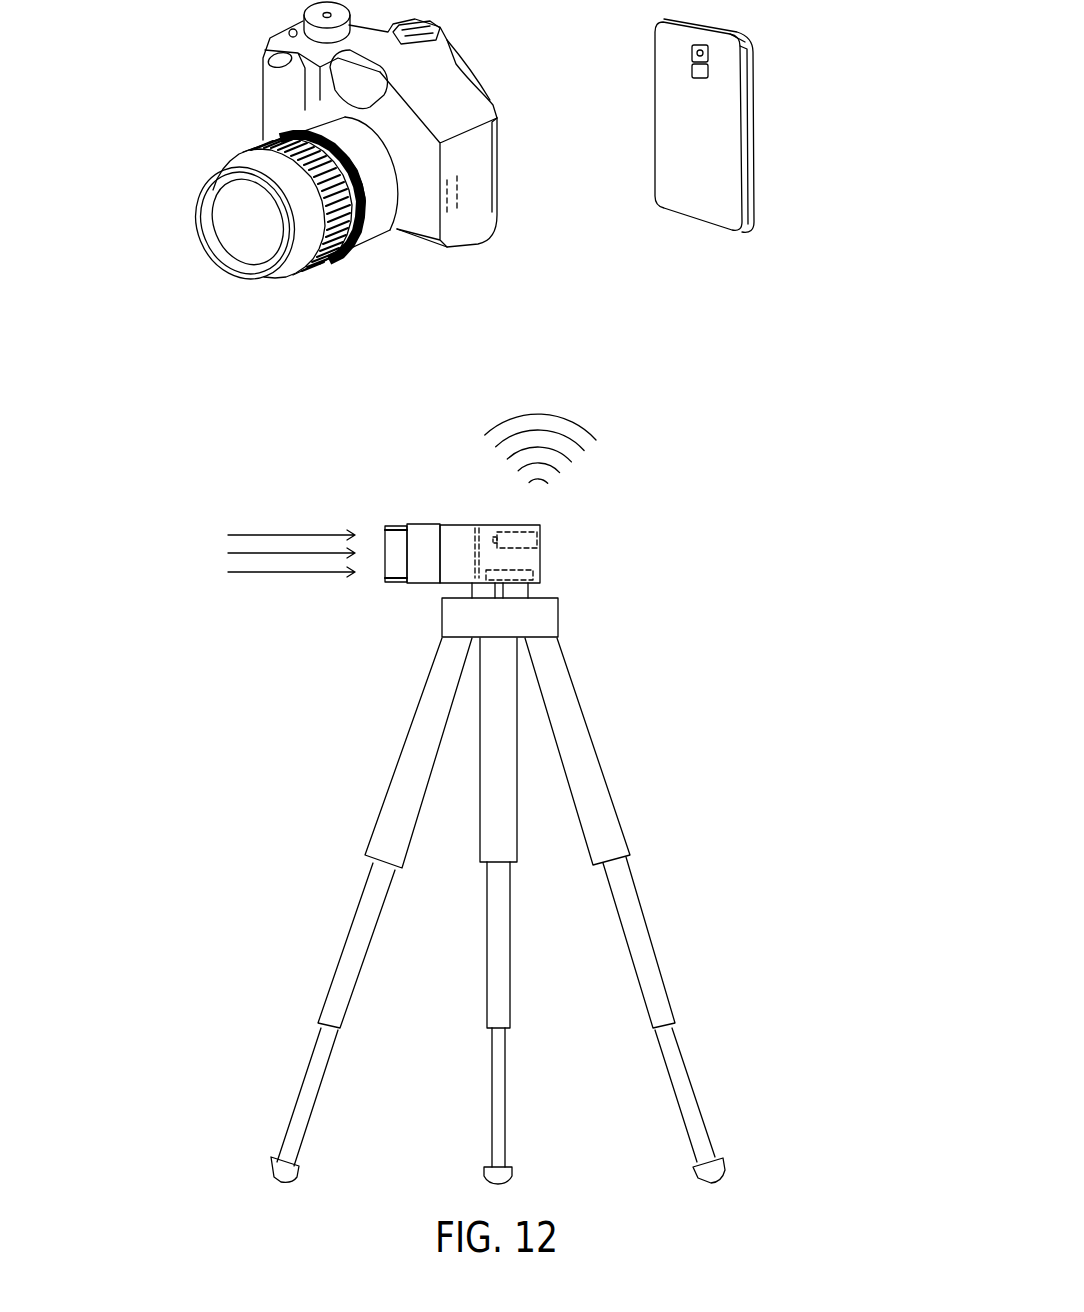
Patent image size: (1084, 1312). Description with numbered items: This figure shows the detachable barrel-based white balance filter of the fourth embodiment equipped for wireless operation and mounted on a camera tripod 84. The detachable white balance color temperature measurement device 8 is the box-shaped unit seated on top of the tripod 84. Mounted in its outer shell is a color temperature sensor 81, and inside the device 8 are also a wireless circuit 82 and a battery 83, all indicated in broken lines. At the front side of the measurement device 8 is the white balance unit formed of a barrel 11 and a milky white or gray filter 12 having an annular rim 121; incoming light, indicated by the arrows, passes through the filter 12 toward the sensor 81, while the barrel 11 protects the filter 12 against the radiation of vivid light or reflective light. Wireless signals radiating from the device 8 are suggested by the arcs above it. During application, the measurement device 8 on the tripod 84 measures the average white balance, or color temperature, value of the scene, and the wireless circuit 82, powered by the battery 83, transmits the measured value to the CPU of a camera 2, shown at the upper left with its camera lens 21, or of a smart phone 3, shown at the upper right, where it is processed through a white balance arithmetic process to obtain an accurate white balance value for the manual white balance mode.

The camera 2 is at (370, 165).
The camera lens 21 is at (317, 223).
The smart phone 3 is at (723, 133).
The detachable white balance color temperature measurement device 8 is at (526, 560).
The color temperature sensor 81 is at (474, 563).
The wireless circuit 82 is at (545, 580).
The battery 83 is at (540, 528).
The tripod 84 is at (592, 768).
The barrel 11 is at (422, 523).
The milky white or gray filter 12 is at (357, 609).
The annular rim 121 is at (390, 582).